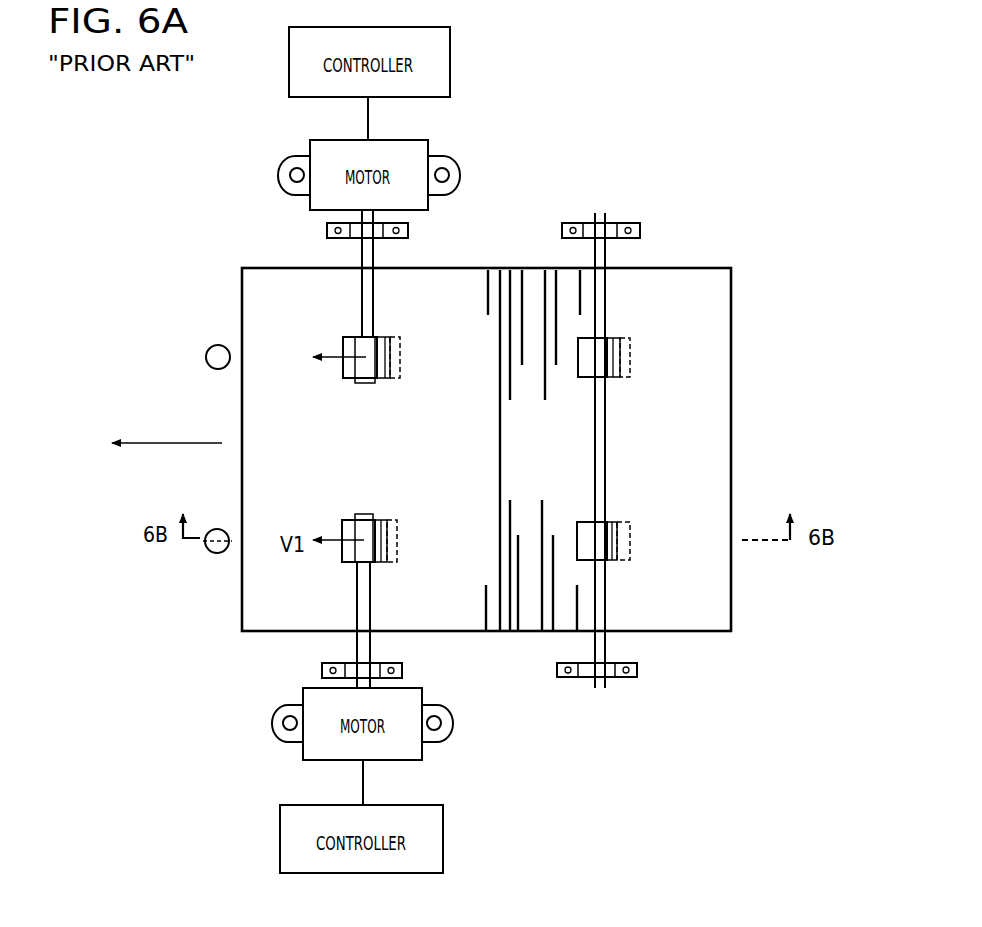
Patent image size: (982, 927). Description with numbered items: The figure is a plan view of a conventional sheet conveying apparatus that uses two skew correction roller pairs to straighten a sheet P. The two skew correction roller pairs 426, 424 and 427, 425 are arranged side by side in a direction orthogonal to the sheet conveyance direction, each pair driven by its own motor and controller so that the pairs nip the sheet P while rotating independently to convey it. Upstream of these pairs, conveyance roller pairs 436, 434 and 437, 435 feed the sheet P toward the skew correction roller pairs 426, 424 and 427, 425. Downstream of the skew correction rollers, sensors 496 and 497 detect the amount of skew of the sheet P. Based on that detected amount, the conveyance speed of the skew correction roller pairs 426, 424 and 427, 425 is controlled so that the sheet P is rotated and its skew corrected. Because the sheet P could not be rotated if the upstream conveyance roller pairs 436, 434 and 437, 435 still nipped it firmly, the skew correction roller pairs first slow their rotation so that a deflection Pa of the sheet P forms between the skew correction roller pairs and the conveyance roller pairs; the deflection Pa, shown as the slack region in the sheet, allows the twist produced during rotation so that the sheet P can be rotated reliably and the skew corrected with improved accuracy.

The sheet P is at (707, 292).
The deflection Pa is at (533, 320).
The skew correction roller 424 is at (388, 563).
The skew correction roller 425 is at (390, 379).
The skew correction roller 426 is at (391, 525).
The skew correction roller 427 is at (378, 337).
The conveyance roller 434 is at (617, 561).
The conveyance roller 435 is at (620, 378).
The conveyance roller 436 is at (607, 522).
The conveyance roller 437 is at (613, 338).
The sensor 496 is at (216, 555).
The sensor 497 is at (207, 362).